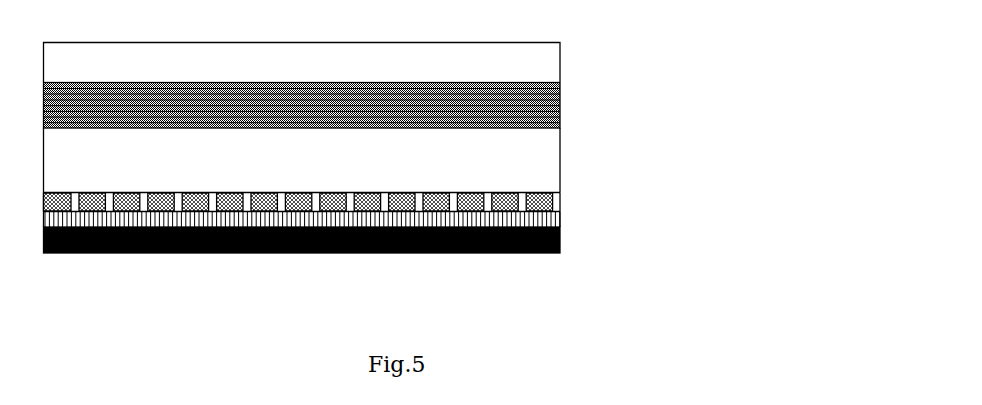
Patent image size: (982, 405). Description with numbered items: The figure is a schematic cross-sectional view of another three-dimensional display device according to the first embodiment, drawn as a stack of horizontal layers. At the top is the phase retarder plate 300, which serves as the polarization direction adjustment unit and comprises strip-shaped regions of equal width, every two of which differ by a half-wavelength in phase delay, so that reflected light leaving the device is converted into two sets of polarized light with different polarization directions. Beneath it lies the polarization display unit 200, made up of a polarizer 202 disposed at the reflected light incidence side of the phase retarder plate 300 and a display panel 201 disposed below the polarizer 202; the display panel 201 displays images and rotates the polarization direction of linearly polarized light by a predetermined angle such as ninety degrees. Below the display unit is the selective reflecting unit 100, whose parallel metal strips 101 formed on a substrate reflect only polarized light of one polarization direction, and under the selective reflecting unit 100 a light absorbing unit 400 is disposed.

The phase retarder plate 300 is at (560, 67).
The polarization display unit 200 is at (377, 138).
The polarizer 202 is at (560, 103).
The display panel 201 is at (556, 158).
The selective reflecting unit 100 is at (338, 186).
The metal strip 101 is at (401, 192).
The light absorbing unit 400 is at (560, 243).